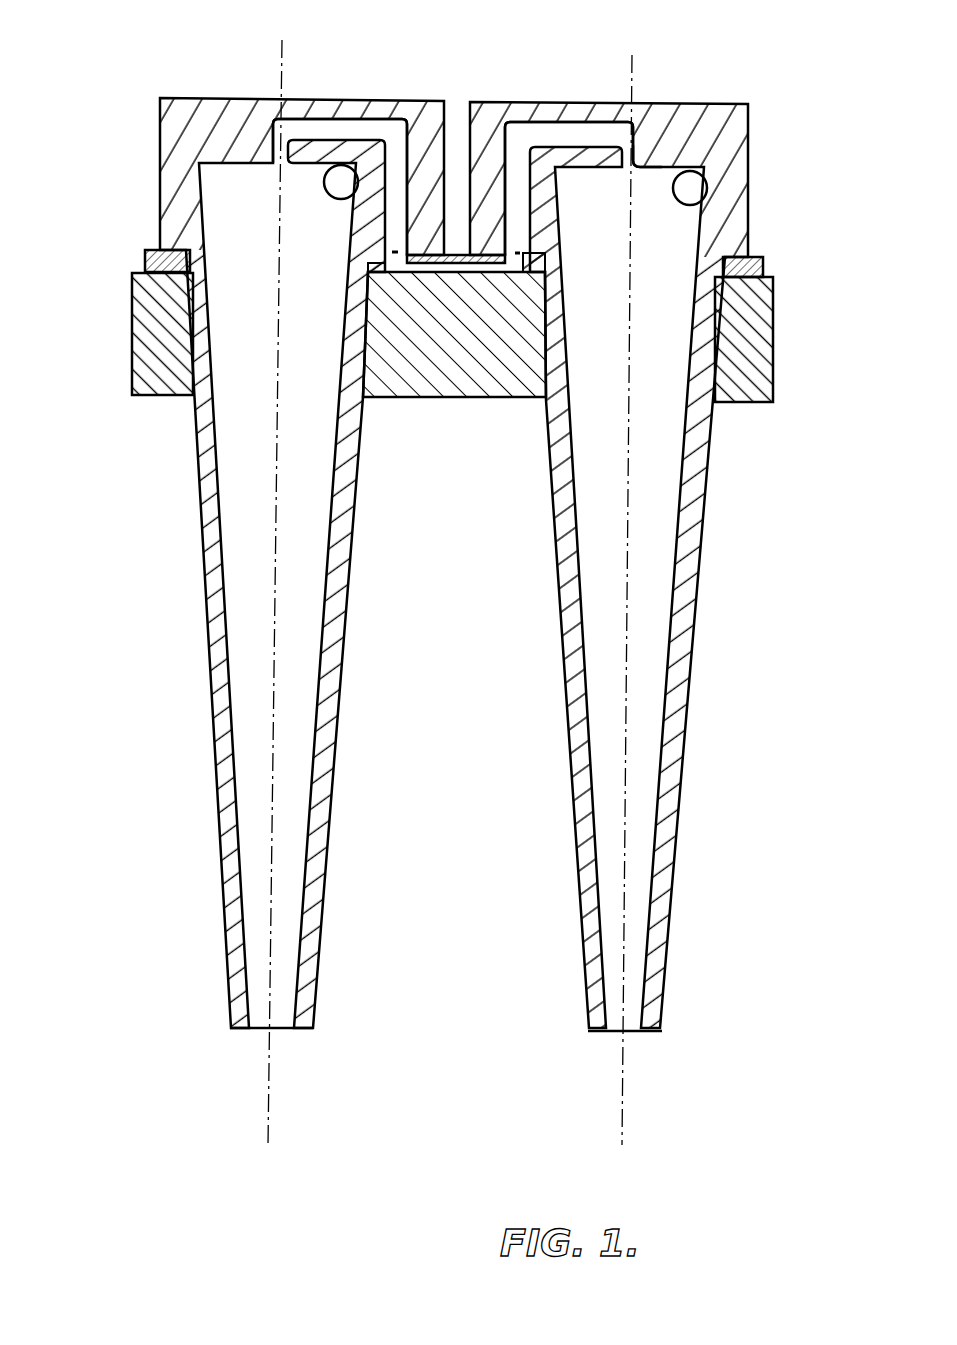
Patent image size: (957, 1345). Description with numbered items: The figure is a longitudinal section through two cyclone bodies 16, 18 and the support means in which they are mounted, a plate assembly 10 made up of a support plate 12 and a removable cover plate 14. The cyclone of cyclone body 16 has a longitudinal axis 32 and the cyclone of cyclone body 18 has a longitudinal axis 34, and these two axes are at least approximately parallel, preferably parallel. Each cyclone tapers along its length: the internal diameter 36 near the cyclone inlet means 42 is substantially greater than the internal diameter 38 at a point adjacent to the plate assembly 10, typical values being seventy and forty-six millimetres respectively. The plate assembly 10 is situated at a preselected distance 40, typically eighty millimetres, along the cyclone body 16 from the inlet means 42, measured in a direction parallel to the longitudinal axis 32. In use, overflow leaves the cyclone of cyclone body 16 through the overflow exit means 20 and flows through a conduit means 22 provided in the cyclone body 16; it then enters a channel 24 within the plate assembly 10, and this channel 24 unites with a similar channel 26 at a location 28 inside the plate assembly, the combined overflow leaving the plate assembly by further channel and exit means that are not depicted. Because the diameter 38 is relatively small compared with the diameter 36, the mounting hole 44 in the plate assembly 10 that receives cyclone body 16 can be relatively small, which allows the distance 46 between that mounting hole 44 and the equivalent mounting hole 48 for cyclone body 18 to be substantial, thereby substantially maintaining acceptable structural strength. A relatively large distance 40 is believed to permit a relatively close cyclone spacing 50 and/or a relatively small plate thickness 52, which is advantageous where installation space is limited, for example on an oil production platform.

The plate assembly 10 is at (786, 349).
The support plate 12 is at (757, 402).
The removable cover plate 14 is at (146, 251).
The cyclone body 16 is at (718, 133).
The cyclone body 18 is at (201, 98).
The overflow exit means 20 is at (660, 148).
The conduit means 22 is at (535, 140).
The channel 24 is at (518, 241).
The channel 26 is at (398, 237).
The location 28 is at (455, 267).
The longitudinal axis 32 is at (627, 739).
The longitudinal axis 34 is at (275, 761).
The internal diameter 36 is at (828, 186).
The internal diameter 38 is at (694, 330).
The distance 40 is at (780, 280).
The cyclone inlet means 42 is at (341, 180).
The mounting hole 44 is at (545, 358).
The distance 46 is at (546, 358).
The mounting hole 48 is at (358, 358).
The cyclone spacing 50 is at (623, 1114).
The plate thickness 52 is at (132, 273).